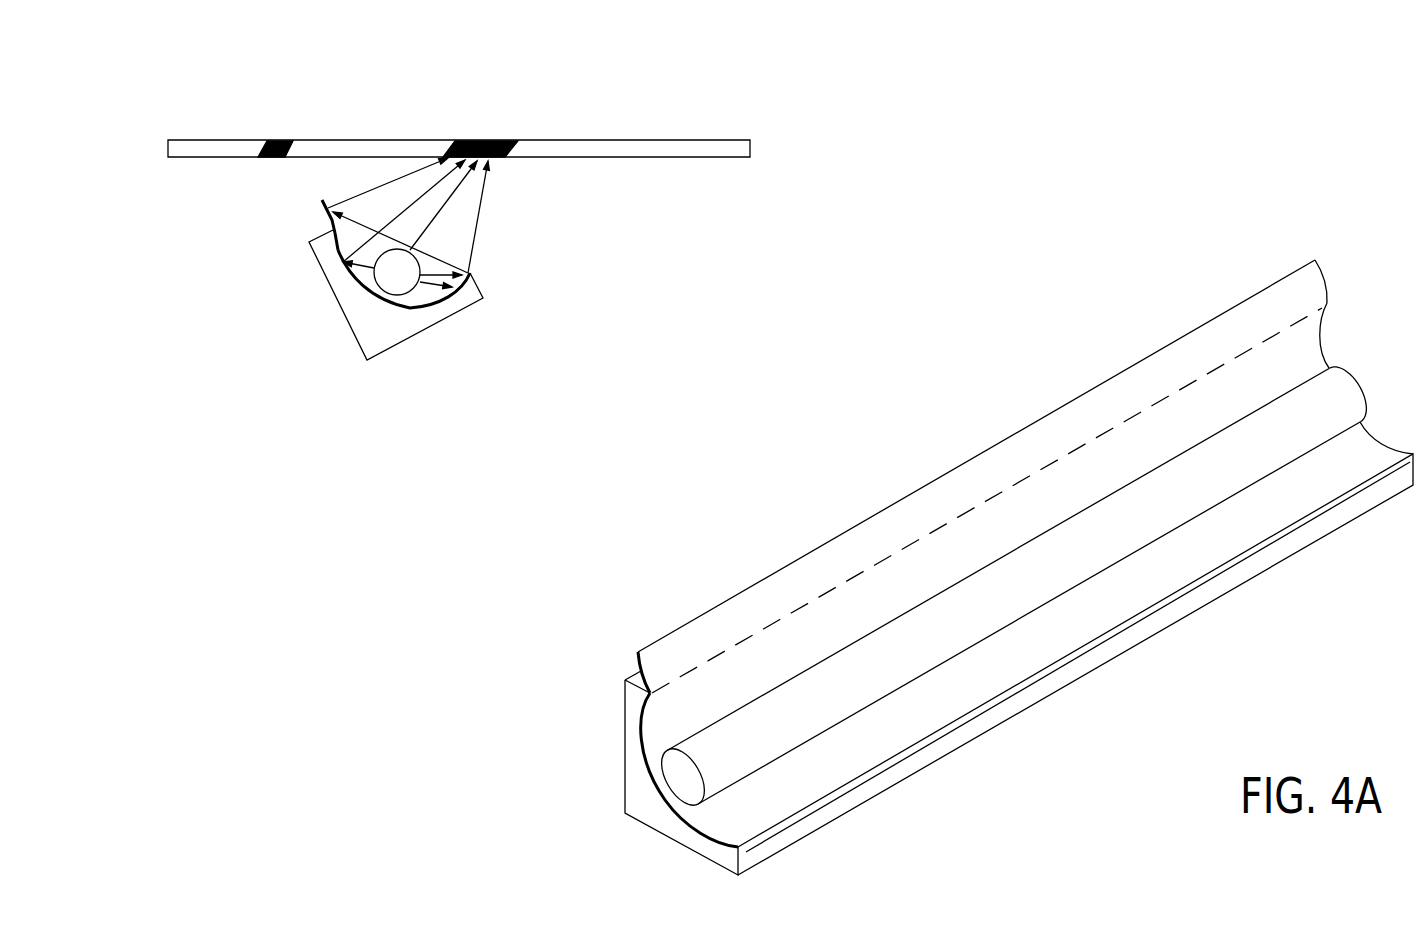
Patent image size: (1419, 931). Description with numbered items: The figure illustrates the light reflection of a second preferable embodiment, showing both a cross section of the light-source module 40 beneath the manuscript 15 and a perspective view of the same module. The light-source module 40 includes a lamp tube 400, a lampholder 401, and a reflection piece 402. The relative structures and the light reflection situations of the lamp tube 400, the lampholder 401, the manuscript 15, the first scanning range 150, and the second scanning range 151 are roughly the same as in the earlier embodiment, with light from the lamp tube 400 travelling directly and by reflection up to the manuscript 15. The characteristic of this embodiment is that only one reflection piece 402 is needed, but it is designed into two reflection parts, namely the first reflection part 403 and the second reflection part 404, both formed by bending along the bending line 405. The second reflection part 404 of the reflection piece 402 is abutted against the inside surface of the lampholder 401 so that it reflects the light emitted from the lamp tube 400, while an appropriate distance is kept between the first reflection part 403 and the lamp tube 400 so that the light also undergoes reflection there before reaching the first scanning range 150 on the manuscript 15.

The manuscript 15 is at (648, 147).
The first scanning range 150 is at (486, 138).
The second scanning range 151 is at (280, 138).
The light-source module 40 is at (294, 285).
The lamp tube 400 is at (388, 277).
The lampholder 401 is at (375, 342).
The reflection piece 402 is at (306, 193).
The first reflection part 403 is at (330, 210).
The second reflection part 404 is at (412, 308).
The bending line 405 is at (992, 498).